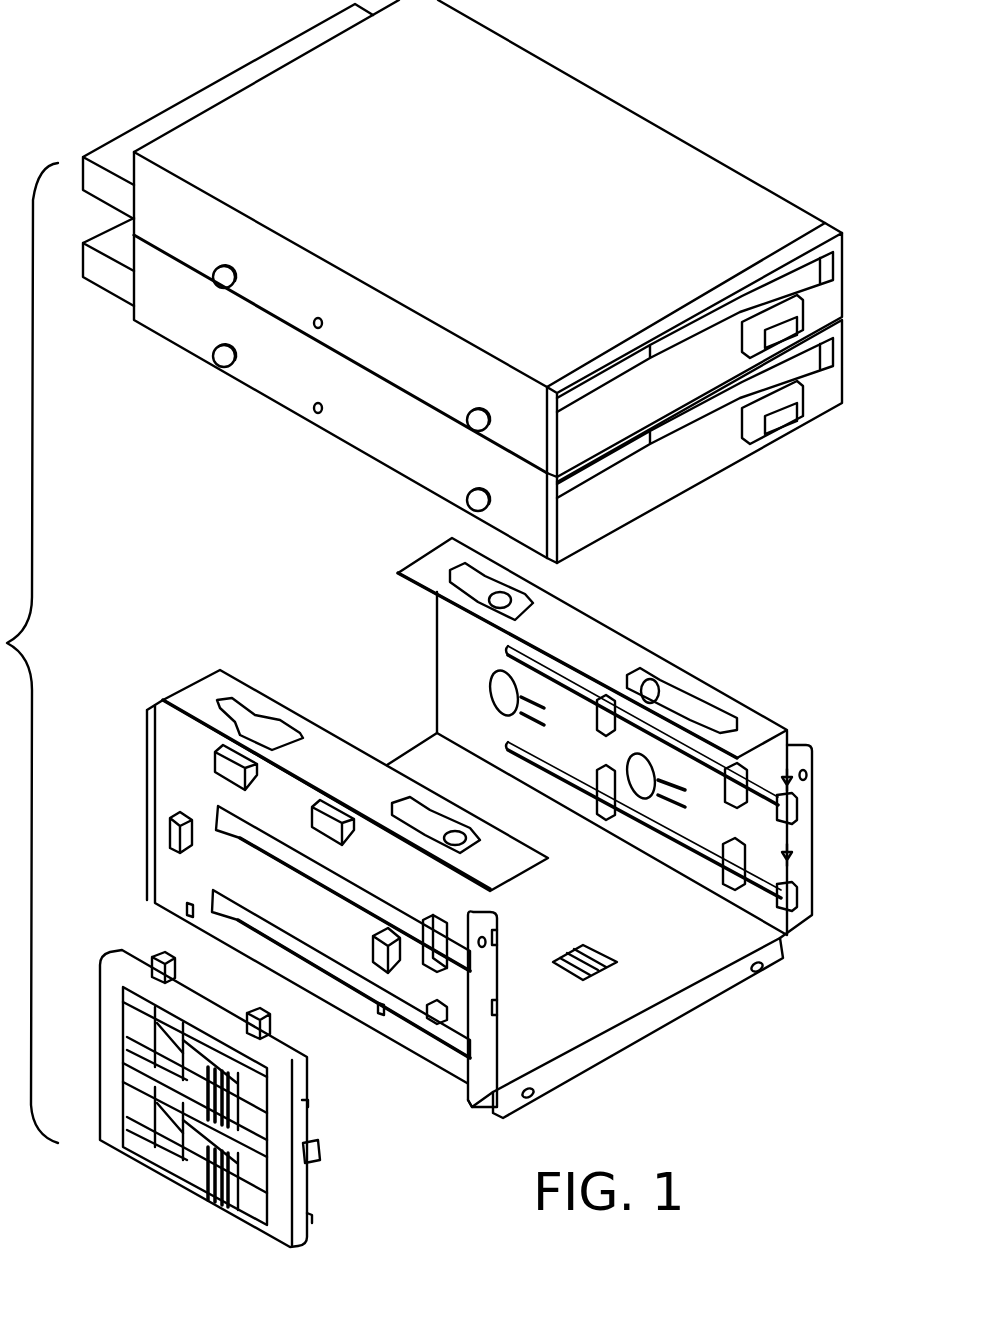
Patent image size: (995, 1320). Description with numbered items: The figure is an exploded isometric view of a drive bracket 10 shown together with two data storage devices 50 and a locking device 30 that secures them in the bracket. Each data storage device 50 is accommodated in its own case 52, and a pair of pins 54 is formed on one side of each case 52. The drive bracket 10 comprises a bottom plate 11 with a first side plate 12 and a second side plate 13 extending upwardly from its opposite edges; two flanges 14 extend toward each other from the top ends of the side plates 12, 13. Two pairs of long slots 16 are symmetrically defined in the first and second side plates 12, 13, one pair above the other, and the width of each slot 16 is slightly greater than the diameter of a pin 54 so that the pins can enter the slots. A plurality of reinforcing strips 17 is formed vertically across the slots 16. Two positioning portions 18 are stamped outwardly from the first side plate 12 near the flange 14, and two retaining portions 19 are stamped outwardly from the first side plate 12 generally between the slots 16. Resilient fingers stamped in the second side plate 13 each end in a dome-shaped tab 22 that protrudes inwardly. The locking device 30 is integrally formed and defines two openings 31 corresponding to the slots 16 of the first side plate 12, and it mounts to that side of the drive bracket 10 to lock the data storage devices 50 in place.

The drive bracket 10 is at (469, 864).
The bottom plate 11 is at (690, 945).
The first side plate 12 is at (408, 901).
The second side plate 13 is at (540, 826).
The flange 14 is at (427, 572).
The long slot 16 is at (792, 812).
The reinforcing strip 17 is at (430, 952).
The positioning portion 18 is at (230, 760).
The retaining portion 19 is at (170, 834).
The dome-shaped tab 22 is at (505, 688).
The locking device 30 is at (236, 1098).
The opening 31 is at (145, 1022).
The data storage device 50 is at (638, 408).
The case 52 is at (697, 170).
The pin 54 is at (226, 287).